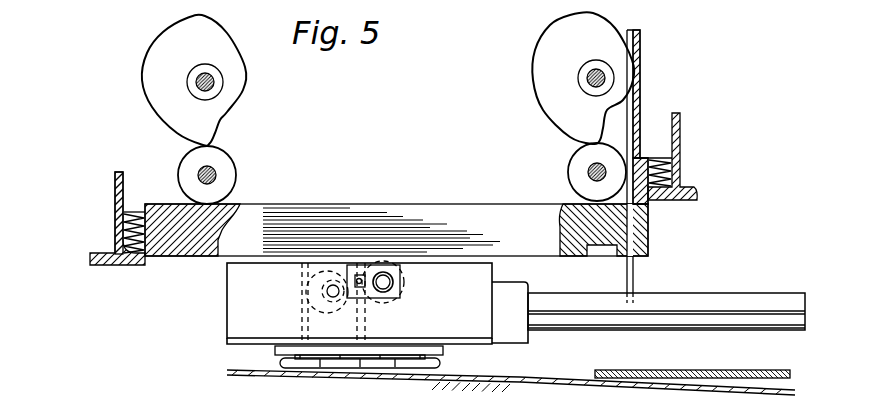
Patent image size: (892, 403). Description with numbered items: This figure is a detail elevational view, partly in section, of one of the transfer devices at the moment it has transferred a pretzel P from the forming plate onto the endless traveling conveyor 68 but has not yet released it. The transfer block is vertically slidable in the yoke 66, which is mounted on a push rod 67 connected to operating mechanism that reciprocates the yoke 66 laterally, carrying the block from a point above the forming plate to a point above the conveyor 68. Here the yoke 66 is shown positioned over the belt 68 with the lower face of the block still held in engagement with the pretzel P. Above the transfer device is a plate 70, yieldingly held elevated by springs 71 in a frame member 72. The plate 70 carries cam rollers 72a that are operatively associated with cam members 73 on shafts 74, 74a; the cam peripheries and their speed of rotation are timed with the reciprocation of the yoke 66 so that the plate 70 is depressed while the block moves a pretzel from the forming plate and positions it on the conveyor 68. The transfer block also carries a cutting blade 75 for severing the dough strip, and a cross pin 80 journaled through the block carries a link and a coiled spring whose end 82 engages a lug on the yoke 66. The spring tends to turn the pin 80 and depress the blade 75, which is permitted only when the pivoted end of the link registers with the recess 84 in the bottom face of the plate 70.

The yoke 66 is at (230, 303).
The push rod 67 is at (612, 326).
The endless traveling conveyor 68 is at (322, 376).
The plate 70 is at (410, 196).
The springs 71 is at (668, 190).
The frame member 72 is at (680, 168).
The cam rollers 72a is at (238, 178).
The cam members 73 is at (240, 63).
The shaft 74 is at (216, 84).
The shaft 74a is at (598, 92).
The cutting blade 75 is at (655, 371).
The cross pin 80 is at (400, 299).
The end of spring 82 is at (383, 293).
The recess 84 is at (625, 234).
The pretzel P is at (445, 362).